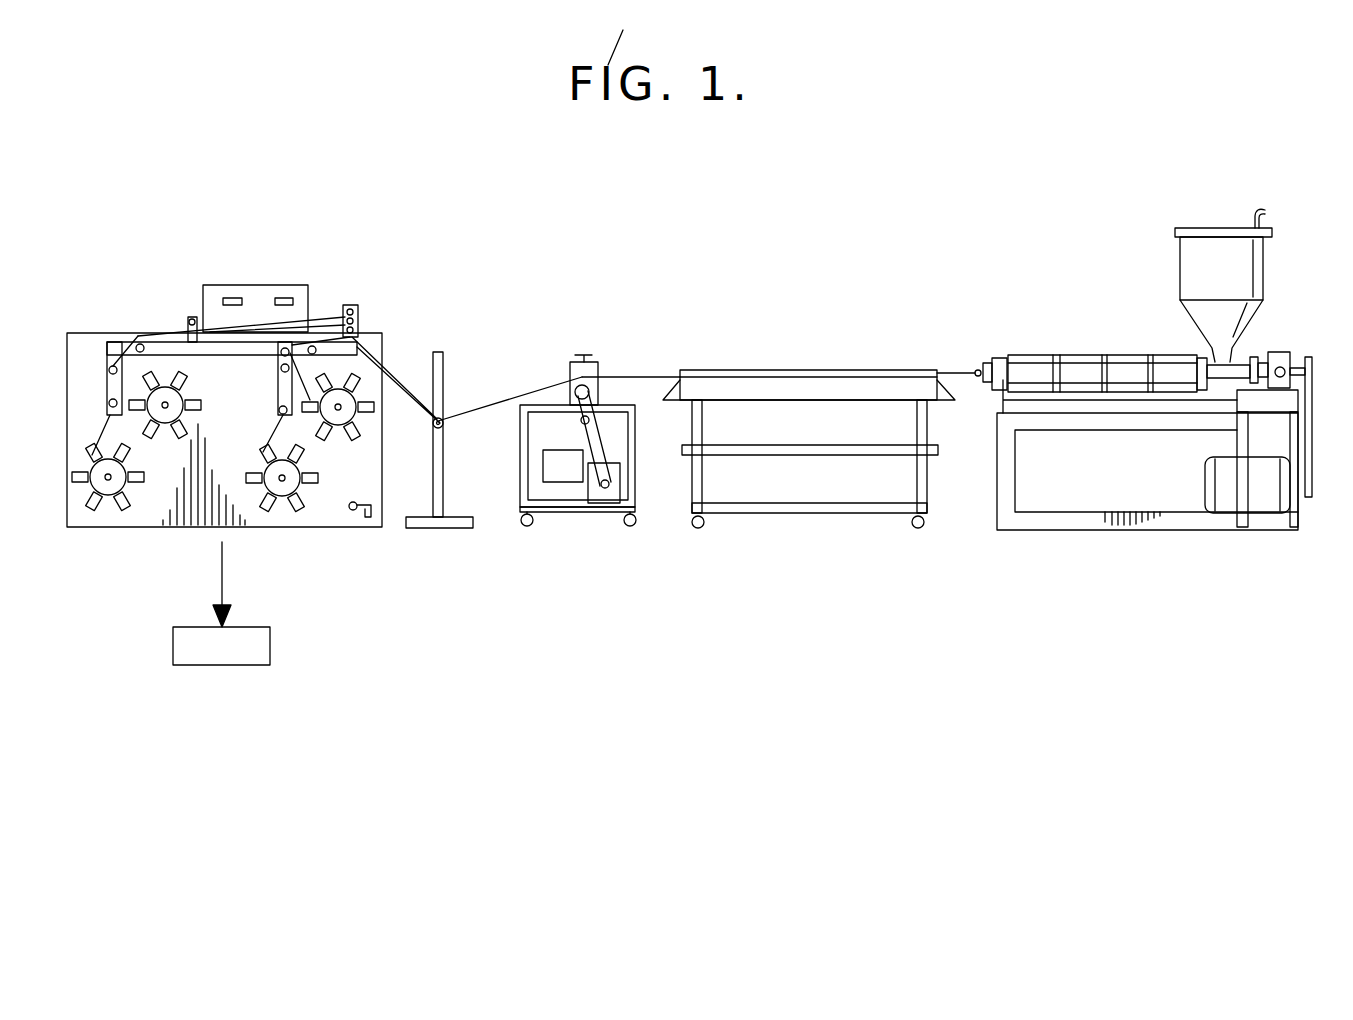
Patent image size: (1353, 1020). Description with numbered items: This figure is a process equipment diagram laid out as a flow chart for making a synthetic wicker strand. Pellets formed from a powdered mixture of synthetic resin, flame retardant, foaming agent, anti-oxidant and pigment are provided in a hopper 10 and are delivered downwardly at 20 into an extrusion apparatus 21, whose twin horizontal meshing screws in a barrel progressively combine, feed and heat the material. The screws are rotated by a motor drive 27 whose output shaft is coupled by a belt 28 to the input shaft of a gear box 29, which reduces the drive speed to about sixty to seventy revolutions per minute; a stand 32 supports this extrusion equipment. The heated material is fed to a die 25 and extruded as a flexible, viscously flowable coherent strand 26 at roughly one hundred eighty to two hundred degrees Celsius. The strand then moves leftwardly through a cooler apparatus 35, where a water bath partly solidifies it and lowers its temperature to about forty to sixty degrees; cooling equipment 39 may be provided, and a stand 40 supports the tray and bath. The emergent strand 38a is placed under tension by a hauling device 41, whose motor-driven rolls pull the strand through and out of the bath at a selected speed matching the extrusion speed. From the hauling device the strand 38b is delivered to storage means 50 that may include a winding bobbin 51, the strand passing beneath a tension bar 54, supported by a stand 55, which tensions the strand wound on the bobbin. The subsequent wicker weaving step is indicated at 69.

The hopper 10 is at (1190, 252).
The pellet delivery 20 is at (1225, 330).
The extrusion apparatus 21 is at (1190, 403).
The die 25 is at (990, 362).
The strand 26 is at (960, 372).
The motor drive 27 is at (1227, 490).
The belt 28 is at (1313, 448).
The gear box 29 is at (1283, 352).
The stand 32 is at (1078, 528).
The cooler apparatus 35 is at (783, 356).
The emergent strand 38a is at (643, 375).
The strand delivered to storage 38b is at (495, 400).
The cooling equipment 39 is at (825, 407).
The stand 40 is at (910, 473).
The hauling device 41 is at (547, 395).
The storage means 50 is at (185, 295).
The winding bobbin 51 is at (282, 496).
The tension bar 54 is at (442, 410).
The stand 55 is at (437, 478).
The wicker weaving step 69 is at (238, 652).